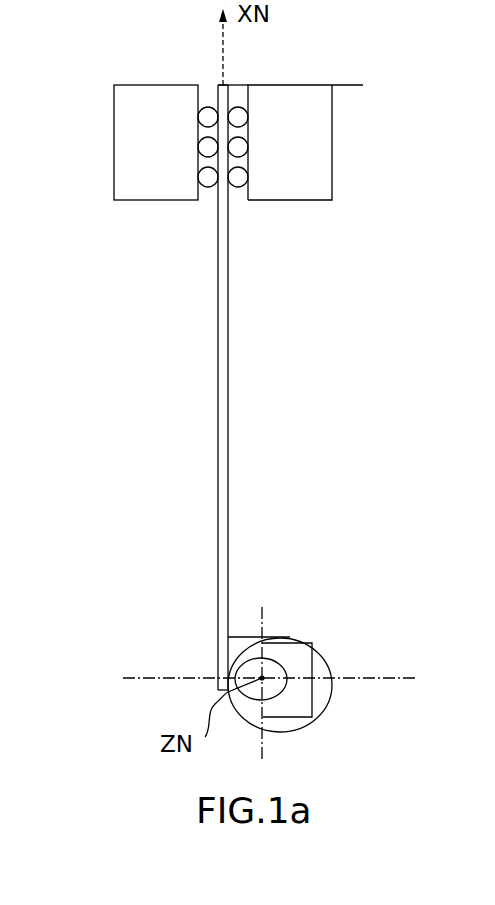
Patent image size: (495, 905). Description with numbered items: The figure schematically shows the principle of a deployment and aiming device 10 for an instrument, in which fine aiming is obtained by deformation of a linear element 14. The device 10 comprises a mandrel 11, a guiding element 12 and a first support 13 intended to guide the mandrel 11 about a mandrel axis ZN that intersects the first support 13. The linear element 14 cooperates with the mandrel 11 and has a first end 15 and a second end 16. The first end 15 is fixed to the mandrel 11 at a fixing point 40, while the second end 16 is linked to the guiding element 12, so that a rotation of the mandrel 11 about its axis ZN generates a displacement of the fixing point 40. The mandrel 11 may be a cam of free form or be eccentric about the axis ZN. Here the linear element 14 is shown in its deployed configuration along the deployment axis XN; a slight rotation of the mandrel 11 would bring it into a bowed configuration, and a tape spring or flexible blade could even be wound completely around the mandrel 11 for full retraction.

The device 10 is at (67, 78).
The mandrel 11 is at (320, 653).
The guiding element 12 is at (253, 178).
The first support 13 is at (293, 707).
The linear element 14 is at (228, 382).
The first end 15 is at (204, 661).
The second end 16 is at (209, 73).
The fixing point 40 is at (218, 680).